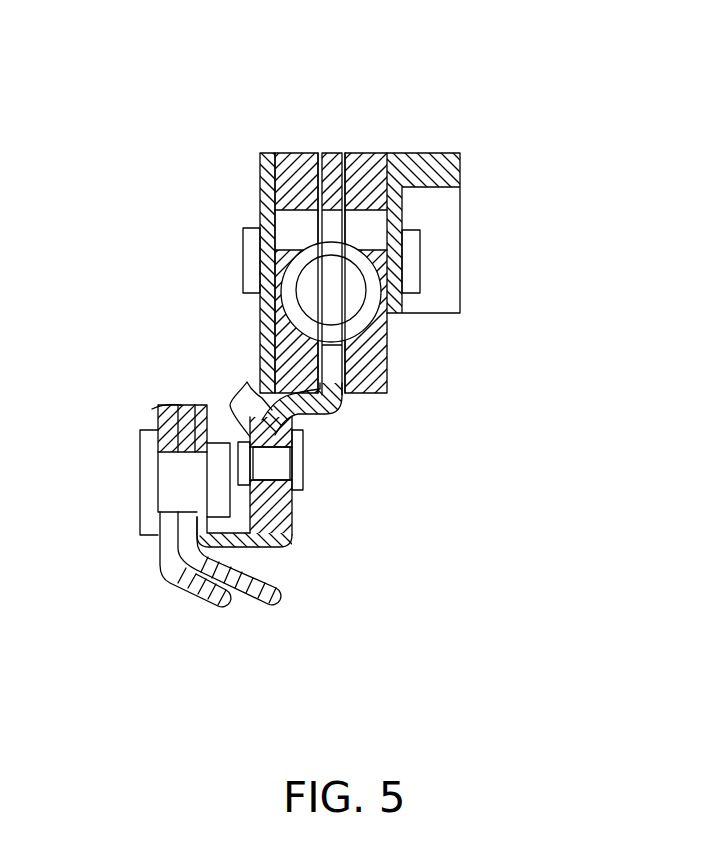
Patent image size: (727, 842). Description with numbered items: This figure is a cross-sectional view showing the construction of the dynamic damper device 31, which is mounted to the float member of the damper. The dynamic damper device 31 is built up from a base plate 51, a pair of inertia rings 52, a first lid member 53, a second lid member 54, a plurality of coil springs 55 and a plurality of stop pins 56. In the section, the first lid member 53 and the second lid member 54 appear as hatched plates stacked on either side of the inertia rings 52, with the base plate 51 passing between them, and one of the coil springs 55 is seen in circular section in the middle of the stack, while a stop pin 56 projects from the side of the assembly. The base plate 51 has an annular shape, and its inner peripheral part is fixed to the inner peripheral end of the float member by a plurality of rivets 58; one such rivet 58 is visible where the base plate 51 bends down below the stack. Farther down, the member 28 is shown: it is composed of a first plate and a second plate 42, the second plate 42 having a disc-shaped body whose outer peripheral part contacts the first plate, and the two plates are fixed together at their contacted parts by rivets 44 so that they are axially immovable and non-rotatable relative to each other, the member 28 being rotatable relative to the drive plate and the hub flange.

The member 28 is at (249, 407).
The dynamic damper device 31 is at (400, 287).
The second plate 42 is at (290, 582).
The rivets 44 is at (148, 503).
The base plate 51 is at (337, 144).
The inertia rings 52 is at (300, 153).
The first lid member 53 is at (267, 173).
The second lid member 54 is at (430, 153).
The coil springs 55 is at (370, 314).
The stop pins 56 is at (243, 272).
The rivets 58 is at (300, 470).